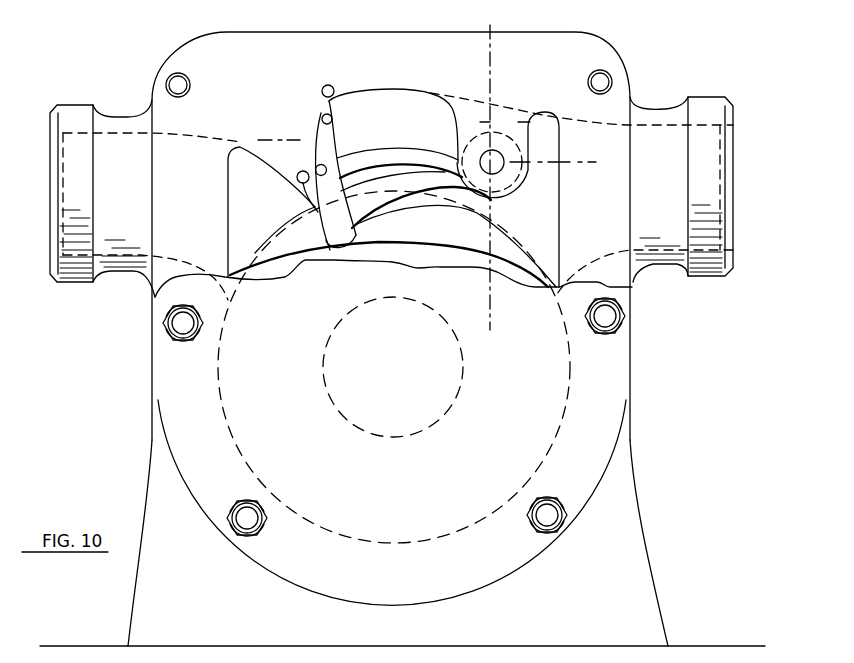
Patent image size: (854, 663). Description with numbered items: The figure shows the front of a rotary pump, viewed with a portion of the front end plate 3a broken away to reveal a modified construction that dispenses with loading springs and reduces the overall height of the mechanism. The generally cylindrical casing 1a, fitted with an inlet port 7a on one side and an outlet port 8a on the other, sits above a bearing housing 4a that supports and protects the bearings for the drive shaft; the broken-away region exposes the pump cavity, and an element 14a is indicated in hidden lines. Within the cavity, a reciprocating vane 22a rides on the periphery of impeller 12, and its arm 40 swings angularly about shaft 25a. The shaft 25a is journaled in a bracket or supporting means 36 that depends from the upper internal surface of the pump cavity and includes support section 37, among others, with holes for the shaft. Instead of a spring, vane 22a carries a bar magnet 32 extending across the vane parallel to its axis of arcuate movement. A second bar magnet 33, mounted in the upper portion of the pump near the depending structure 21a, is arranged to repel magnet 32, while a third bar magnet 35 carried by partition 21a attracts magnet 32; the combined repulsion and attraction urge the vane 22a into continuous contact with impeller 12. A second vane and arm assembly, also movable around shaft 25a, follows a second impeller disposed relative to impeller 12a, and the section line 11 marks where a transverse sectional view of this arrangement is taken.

The pump housing 1a is at (192, 65).
The circular body / bearing housing 3a is at (595, 433).
The pedestal base 4a is at (622, 558).
The inlet pipe flange 7a is at (40, 163).
The outlet pipe flange 8a is at (740, 167).
The section line 11- 11 is at (507, 50).
The impeller 12 is at (248, 130).
The impeller 12a is at (450, 245).
The hidden bearing bore circle 14a is at (520, 246).
The depending structure (partition) 21a is at (313, 126).
The vane 22a is at (332, 215).
The shaft 25a is at (499, 171).
The bar magnet 32 is at (316, 167).
The second bar magnet 33 is at (322, 88).
The third bar magnet 35 is at (297, 177).
The bracket (supporting means) 36 is at (450, 134).
The section of supporting means 37 is at (505, 121).
The arm 40 is at (400, 187).